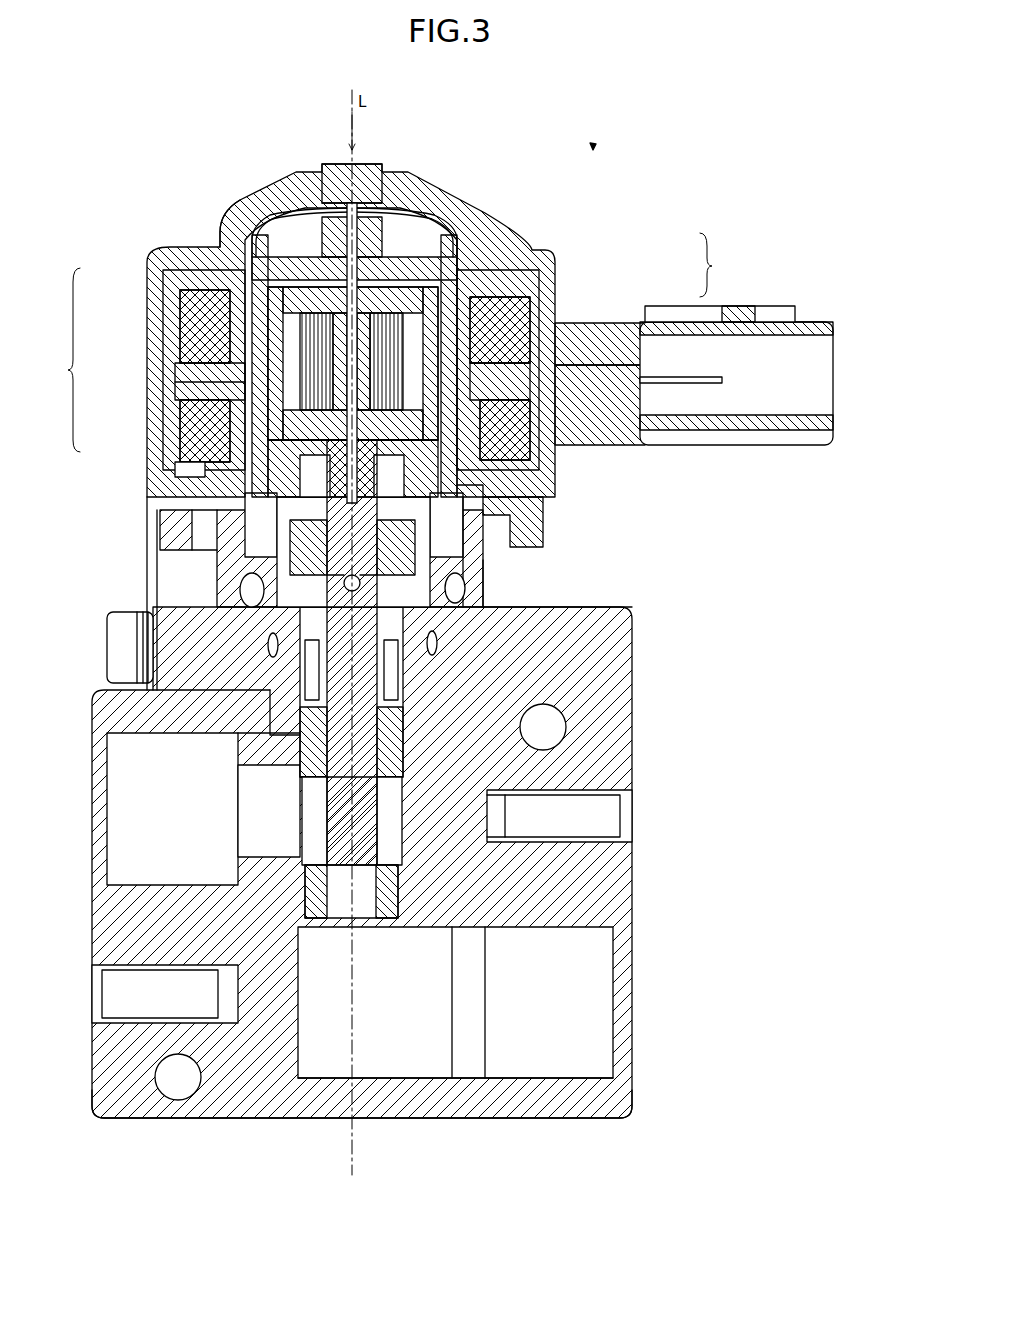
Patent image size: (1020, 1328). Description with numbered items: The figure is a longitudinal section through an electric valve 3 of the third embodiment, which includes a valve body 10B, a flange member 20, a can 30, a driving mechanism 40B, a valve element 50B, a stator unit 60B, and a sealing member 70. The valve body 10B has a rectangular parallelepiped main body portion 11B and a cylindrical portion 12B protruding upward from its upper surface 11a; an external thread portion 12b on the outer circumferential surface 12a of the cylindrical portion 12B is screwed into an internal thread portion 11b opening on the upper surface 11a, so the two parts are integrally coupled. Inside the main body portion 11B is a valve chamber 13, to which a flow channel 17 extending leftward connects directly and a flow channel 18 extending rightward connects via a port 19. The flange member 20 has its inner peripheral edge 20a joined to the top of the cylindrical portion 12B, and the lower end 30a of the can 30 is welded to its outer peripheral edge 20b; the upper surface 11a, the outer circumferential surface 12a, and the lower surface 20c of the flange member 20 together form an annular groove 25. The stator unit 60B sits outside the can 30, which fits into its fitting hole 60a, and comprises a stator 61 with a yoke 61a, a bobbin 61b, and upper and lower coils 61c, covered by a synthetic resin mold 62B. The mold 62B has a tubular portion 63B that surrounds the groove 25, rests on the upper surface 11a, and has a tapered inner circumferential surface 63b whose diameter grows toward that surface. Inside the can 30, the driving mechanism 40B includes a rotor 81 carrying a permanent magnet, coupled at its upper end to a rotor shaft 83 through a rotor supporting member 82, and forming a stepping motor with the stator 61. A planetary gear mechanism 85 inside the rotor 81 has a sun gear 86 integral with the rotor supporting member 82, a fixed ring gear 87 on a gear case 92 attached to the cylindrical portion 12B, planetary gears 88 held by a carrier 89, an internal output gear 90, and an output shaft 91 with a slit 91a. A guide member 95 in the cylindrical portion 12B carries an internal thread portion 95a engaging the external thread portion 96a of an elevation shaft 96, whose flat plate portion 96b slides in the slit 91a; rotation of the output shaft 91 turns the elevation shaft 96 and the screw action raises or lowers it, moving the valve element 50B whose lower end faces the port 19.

The electric valve 3 is at (593, 148).
The valve body 10B is at (630, 1108).
The main body portion 11B is at (632, 770).
The upper surface 11a is at (487, 608).
The internal thread portion 11b is at (290, 720).
The cylindrical portion 12B is at (238, 745).
The outer circumferential surface 12a is at (487, 582).
The external thread portion 12b is at (275, 700).
The valve chamber 13 is at (505, 817).
The flow channel 17 is at (140, 884).
The flow channel 18 is at (596, 1076).
The port 19 is at (384, 870).
The flange member 20 is at (233, 562).
The inner peripheral edge 20a is at (183, 522).
The outer peripheral edge 20b is at (248, 588).
The lower surface 20c is at (485, 567).
The groove 25 is at (428, 615).
The can 30 is at (262, 190).
The lower end 30a is at (213, 545).
The driving mechanism 40B is at (312, 240).
The valve element 50B is at (346, 920).
The stator unit 60B is at (398, 173).
The fitting hole 60a is at (222, 230).
The stator 61 is at (717, 265).
The yoke 61a is at (590, 365).
The bobbin 61b is at (560, 345).
The coil 61c is at (548, 300).
The mold 62B is at (425, 205).
The tubular portion 63B is at (467, 612).
The inner circumferential surface 63b is at (468, 590).
The sealing member 70 is at (300, 596).
The rotor 81 is at (238, 298).
The rotor supporting member 82 is at (440, 243).
The rotor shaft 83 is at (360, 250).
The planetary gear mechanism 85 is at (62, 360).
The sun gear 86 is at (232, 330).
The fixed ring gear 87 is at (236, 310).
The planetary gears 88 is at (240, 356).
The carrier 89 is at (238, 400).
The output gear 90 is at (240, 380).
The output shaft 91 is at (236, 456).
The slit 91a is at (192, 470).
The gear case 92 is at (240, 430).
The guide member 95 is at (513, 450).
The internal thread portion 95a is at (505, 472).
The elevation shaft 96 is at (513, 515).
The external thread portion 96a is at (475, 492).
The flat plate portion 96b is at (292, 525).